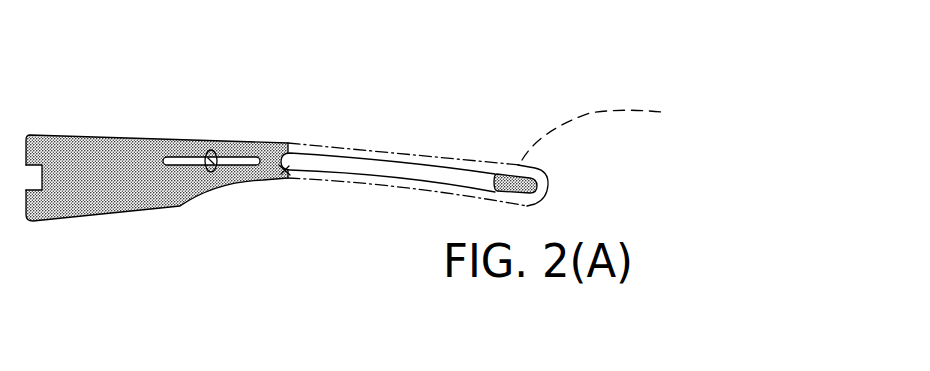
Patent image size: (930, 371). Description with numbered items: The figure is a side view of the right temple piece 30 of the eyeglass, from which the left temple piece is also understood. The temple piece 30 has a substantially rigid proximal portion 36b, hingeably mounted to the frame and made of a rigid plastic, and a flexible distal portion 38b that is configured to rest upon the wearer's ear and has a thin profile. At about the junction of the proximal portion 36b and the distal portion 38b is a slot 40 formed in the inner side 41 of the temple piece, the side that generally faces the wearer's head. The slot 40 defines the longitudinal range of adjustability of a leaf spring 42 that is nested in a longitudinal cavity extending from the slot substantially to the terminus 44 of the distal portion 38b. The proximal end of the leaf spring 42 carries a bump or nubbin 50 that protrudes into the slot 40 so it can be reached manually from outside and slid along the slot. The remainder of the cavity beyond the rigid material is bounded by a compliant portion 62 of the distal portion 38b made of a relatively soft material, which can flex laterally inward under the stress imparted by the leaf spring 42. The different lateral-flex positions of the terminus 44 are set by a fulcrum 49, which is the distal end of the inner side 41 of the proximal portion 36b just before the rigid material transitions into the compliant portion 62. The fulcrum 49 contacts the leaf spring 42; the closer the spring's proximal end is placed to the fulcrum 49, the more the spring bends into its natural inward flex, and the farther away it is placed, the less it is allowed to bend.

The temple piece 30 is at (107, 137).
The proximal portion 36b is at (60, 143).
The inner side 41 is at (103, 190).
The slot 40 is at (258, 160).
The nubbin 50 is at (210, 152).
The leaf spring 42 is at (252, 160).
The distal portion 38b is at (460, 157).
The terminus 44 is at (548, 188).
The compliant portion 62 is at (610, 132).
The fulcrum 49 is at (283, 170).